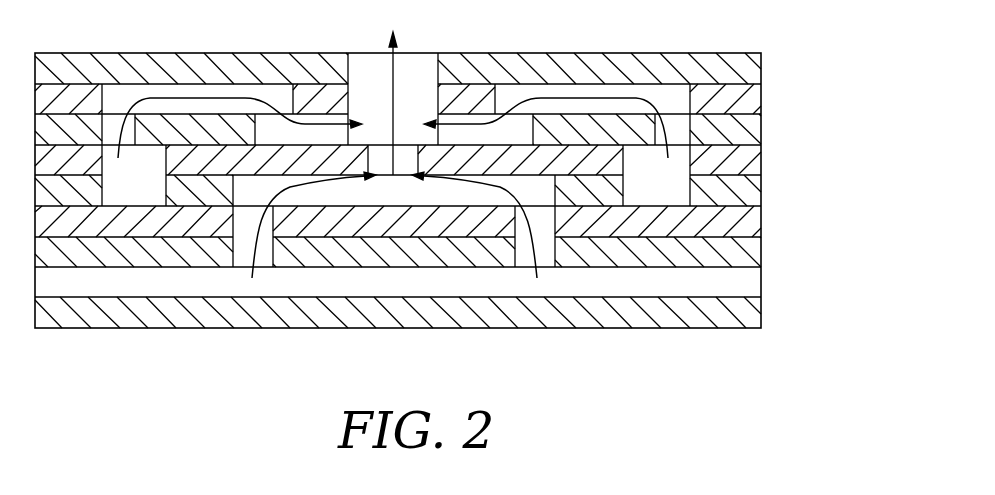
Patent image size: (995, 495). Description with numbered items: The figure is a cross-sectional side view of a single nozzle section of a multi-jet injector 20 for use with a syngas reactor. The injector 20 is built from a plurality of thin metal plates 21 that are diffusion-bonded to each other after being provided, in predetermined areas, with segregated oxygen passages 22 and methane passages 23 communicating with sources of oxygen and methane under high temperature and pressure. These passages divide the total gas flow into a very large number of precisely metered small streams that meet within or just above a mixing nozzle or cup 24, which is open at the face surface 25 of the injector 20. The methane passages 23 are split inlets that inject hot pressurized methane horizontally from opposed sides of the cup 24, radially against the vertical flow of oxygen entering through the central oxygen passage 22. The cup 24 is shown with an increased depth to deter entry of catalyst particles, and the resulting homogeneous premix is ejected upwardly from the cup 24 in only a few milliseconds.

The injector 20 is at (745, 53).
The thin metal plates 21 is at (763, 72).
The oxygen passages 22 is at (383, 192).
The methane passages 23 is at (290, 112).
The mixing nozzle or cup 24 is at (404, 62).
The face surface 25 is at (474, 53).